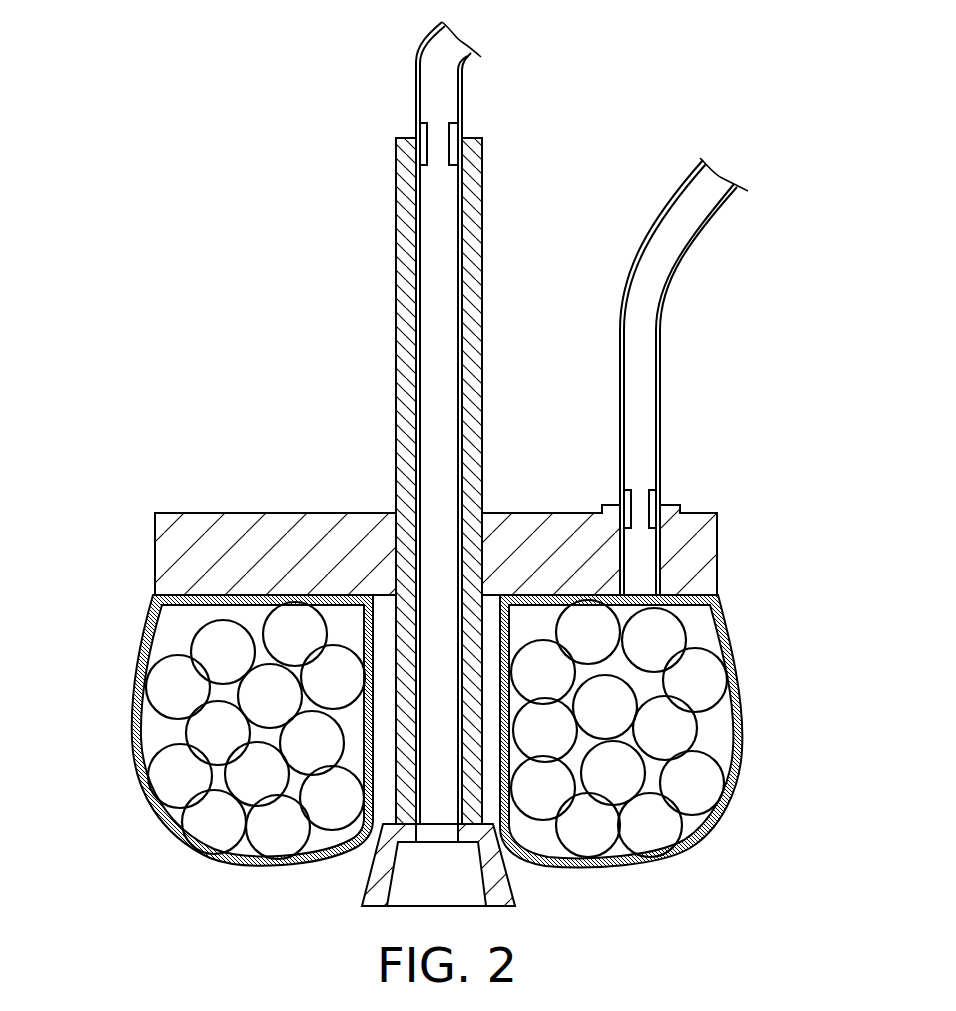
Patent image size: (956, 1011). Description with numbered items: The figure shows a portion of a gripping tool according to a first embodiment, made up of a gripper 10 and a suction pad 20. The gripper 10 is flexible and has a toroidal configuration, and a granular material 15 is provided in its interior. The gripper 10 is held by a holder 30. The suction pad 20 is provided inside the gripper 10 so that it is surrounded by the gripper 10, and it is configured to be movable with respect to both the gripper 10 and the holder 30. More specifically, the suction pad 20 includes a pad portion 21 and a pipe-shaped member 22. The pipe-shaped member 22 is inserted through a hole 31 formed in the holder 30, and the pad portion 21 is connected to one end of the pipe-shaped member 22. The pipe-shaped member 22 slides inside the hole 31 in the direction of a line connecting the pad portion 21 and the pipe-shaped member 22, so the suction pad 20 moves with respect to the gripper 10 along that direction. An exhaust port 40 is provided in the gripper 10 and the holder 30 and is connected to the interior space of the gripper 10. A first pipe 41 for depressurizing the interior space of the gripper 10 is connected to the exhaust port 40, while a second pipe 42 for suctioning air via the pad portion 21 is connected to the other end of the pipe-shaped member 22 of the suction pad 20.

The gripper 10 is at (183, 831).
The granular material 15 is at (167, 777).
The suction pad 20 is at (250, 892).
The pad portion 21 is at (381, 898).
The pipe-shaped member 22 is at (402, 803).
The holder 30 is at (147, 536).
The hole 31 is at (396, 538).
The exhaust port 40 is at (642, 558).
The first pipe 41 is at (692, 202).
The second pipe 42 is at (452, 90).